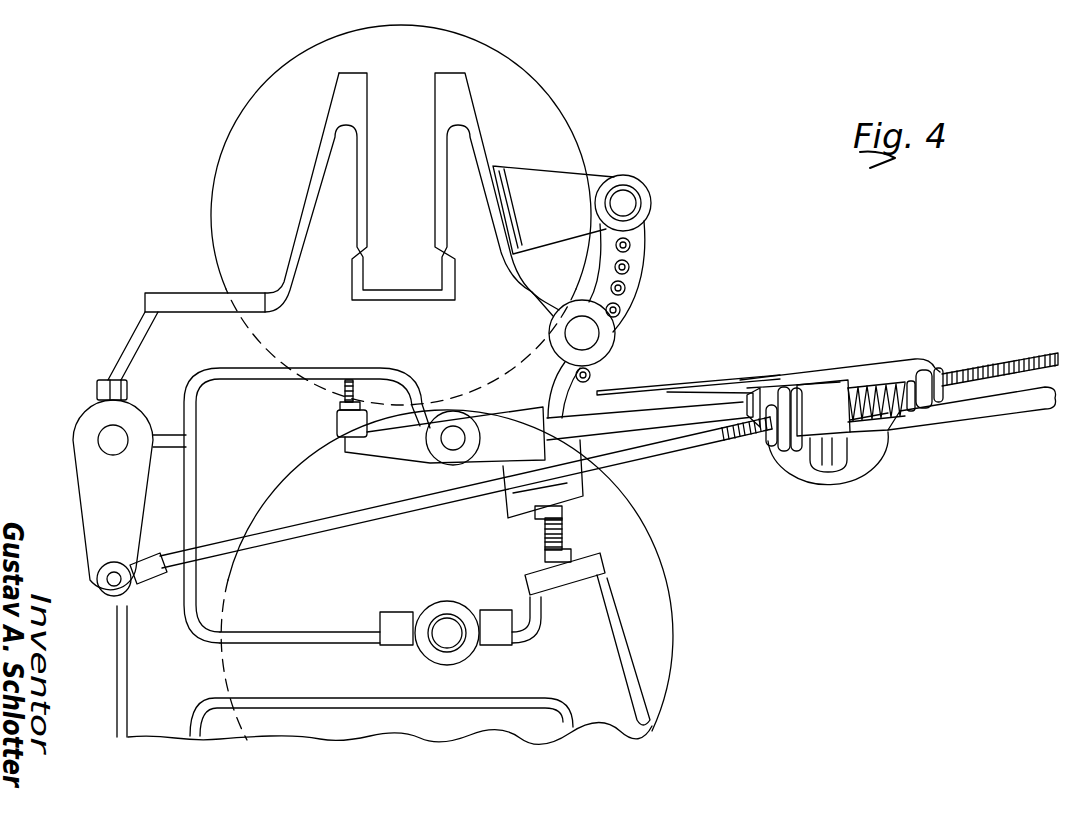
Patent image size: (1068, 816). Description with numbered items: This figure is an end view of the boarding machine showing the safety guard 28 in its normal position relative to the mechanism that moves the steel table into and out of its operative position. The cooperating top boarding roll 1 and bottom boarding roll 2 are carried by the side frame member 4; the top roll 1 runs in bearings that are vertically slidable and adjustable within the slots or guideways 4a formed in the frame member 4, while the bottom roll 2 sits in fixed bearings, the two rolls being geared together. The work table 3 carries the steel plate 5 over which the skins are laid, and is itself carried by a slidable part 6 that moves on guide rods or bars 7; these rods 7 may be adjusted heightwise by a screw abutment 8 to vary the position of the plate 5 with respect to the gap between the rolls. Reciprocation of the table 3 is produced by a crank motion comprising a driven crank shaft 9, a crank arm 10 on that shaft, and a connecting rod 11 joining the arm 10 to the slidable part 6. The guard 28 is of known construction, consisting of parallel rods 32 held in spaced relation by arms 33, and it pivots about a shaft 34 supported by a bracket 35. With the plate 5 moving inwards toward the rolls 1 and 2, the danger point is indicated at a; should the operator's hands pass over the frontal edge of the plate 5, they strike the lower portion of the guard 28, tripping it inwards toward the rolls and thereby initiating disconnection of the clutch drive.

The top boarding roll 1 is at (530, 103).
The bottom boarding roll 2 is at (290, 472).
The work table 3 is at (852, 378).
The side frame member 4 is at (133, 647).
The slots or guideways 4a is at (372, 184).
The steel plate 5 is at (662, 387).
The slidable part 6 is at (757, 392).
The guide rods or bars 7 is at (593, 422).
The screw abutment 8 is at (345, 390).
The crank shaft 9 is at (98, 436).
The crank arm 10 is at (78, 478).
The connecting rod 11 is at (345, 530).
The safety guard 28 is at (643, 279).
The parallel rods 32 is at (632, 265).
The arms 33 is at (628, 300).
The shaft 34 is at (637, 198).
The bracket 35 is at (577, 184).
The danger point a is at (603, 380).